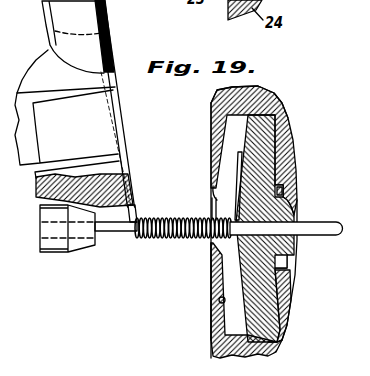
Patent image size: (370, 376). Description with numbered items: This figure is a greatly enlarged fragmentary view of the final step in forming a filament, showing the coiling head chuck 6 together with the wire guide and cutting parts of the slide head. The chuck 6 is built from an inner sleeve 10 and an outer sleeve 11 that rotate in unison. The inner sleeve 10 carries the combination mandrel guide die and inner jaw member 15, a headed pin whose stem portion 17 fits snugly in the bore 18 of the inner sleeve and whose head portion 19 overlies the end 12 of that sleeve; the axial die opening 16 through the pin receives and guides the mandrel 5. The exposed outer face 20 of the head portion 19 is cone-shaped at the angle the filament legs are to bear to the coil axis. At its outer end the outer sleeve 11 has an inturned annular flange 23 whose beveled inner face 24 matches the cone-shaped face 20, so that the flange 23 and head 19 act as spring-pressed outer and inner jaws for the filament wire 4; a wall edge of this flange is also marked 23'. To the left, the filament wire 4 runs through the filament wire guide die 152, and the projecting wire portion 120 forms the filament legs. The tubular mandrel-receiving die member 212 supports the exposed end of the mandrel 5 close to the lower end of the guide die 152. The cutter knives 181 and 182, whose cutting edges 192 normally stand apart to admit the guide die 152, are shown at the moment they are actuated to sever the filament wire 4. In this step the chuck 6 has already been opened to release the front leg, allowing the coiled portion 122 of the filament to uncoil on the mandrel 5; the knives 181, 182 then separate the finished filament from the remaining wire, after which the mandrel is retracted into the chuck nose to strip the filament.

The filament wire guide die 152 is at (53, 18).
The filament wire 4 is at (125, 118).
The cutter knife 182 is at (107, 110).
The cutting edge 192 is at (104, 158).
The cutter knife 181 is at (115, 190).
The projecting wire portion (filament leg) 120 is at (138, 207).
The tubular mandrel-receiving die member 212 is at (57, 253).
The mandrel 5 is at (118, 235).
The coiled portion of the filament 122 is at (165, 245).
The chuck 6 is at (208, 147).
The outer sleeve 11 is at (208, 104).
The outer face of the head portion 20 is at (233, 333).
The combination mandrel guide die and inner jaw member 15 is at (250, 255).
The end of the inner sleeve 12 is at (281, 290).
The inner sleeve 10 is at (289, 305).
The axial die opening 16 is at (295, 205).
The bore of the inner sleeve 18 is at (290, 270).
The stem portion 17 is at (298, 250).
The head portion 19 is at (278, 343).
The inturned annular flange 23 is at (192, 291).
The inner face of the flange 24 is at (219, 300).
The wall 23' is at (200, 202).